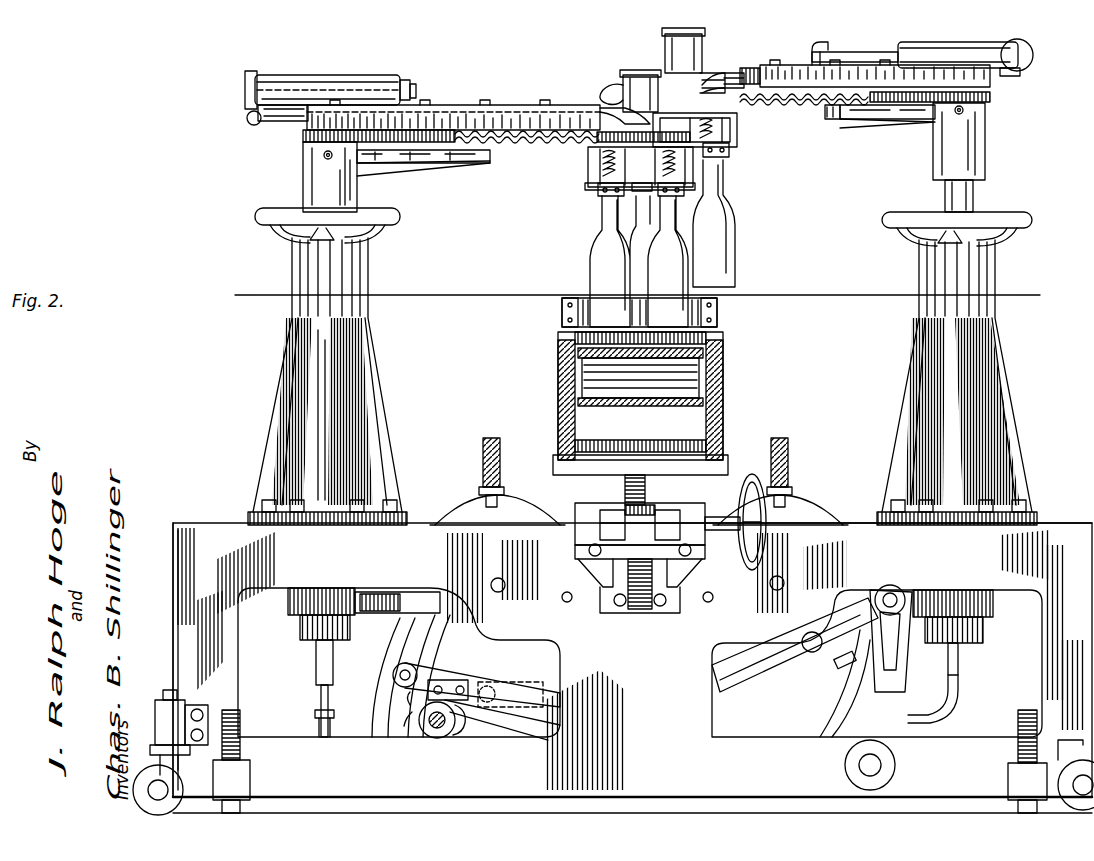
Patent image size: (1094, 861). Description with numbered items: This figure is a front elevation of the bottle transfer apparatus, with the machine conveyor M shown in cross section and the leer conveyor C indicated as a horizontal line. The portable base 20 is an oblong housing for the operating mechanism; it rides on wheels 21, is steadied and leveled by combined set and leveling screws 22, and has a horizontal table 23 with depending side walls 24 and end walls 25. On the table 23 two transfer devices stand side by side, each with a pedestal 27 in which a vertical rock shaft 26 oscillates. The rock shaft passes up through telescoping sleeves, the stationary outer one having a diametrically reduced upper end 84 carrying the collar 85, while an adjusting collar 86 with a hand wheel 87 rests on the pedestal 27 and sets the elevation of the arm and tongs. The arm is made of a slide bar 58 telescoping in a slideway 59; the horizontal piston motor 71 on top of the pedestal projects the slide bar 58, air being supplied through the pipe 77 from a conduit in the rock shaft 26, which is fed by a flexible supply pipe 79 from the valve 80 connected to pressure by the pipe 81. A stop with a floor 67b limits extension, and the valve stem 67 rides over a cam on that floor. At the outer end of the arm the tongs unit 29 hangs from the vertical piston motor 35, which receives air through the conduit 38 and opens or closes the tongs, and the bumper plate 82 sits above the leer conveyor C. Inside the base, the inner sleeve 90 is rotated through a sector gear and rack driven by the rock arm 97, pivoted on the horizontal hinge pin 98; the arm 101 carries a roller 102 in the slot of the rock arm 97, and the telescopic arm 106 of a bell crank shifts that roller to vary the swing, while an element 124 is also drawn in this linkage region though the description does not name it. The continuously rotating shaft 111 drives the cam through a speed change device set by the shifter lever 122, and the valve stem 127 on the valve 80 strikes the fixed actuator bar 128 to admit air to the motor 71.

The portable base 20 is at (174, 528).
The wheels 21 is at (155, 712).
The combined set and leveling screws 22 is at (242, 737).
The horizontal table 23 is at (1060, 525).
The side walls 24 is at (740, 753).
The end walls 25 is at (172, 585).
The vertical rock shaft 26 is at (317, 662).
The pedestal 27 is at (374, 285).
The tongs unit 29 is at (752, 131).
The vertical piston motor 35 is at (655, 50).
The conduit 38 is at (603, 94).
The slide bar 58 is at (744, 69).
The slideway 59 is at (496, 110).
The valve stem 67 is at (830, 117).
The floor 67b is at (415, 154).
The horizontal piston motor 71 is at (282, 68).
The pipe 77 is at (268, 121).
The flexible supply pipe 79 is at (322, 734).
The valve 80 is at (845, 664).
The pipe 81 is at (854, 697).
The bumper plate 82 is at (560, 312).
The diametrically reduced upper end 84 is at (968, 193).
The collar 85 is at (303, 188).
The adjusting collar 86 is at (924, 230).
The hand wheel 87 is at (395, 223).
The inner sleeve 90 is at (300, 624).
The rock arm 97 is at (922, 712).
The horizontal hinge pin 98 is at (878, 765).
The arm 101 is at (488, 663).
The roller 102 is at (448, 676).
The telescopic arm 106 is at (533, 686).
The continuously rotating shaft 111 is at (433, 741).
The shifter lever 122 is at (483, 490).
The lever 124 is at (539, 728).
The valve stem 127 is at (408, 722).
The actuator bar 128 is at (372, 710).
The leer conveyor C is at (500, 295).
The machine conveyor M is at (718, 372).